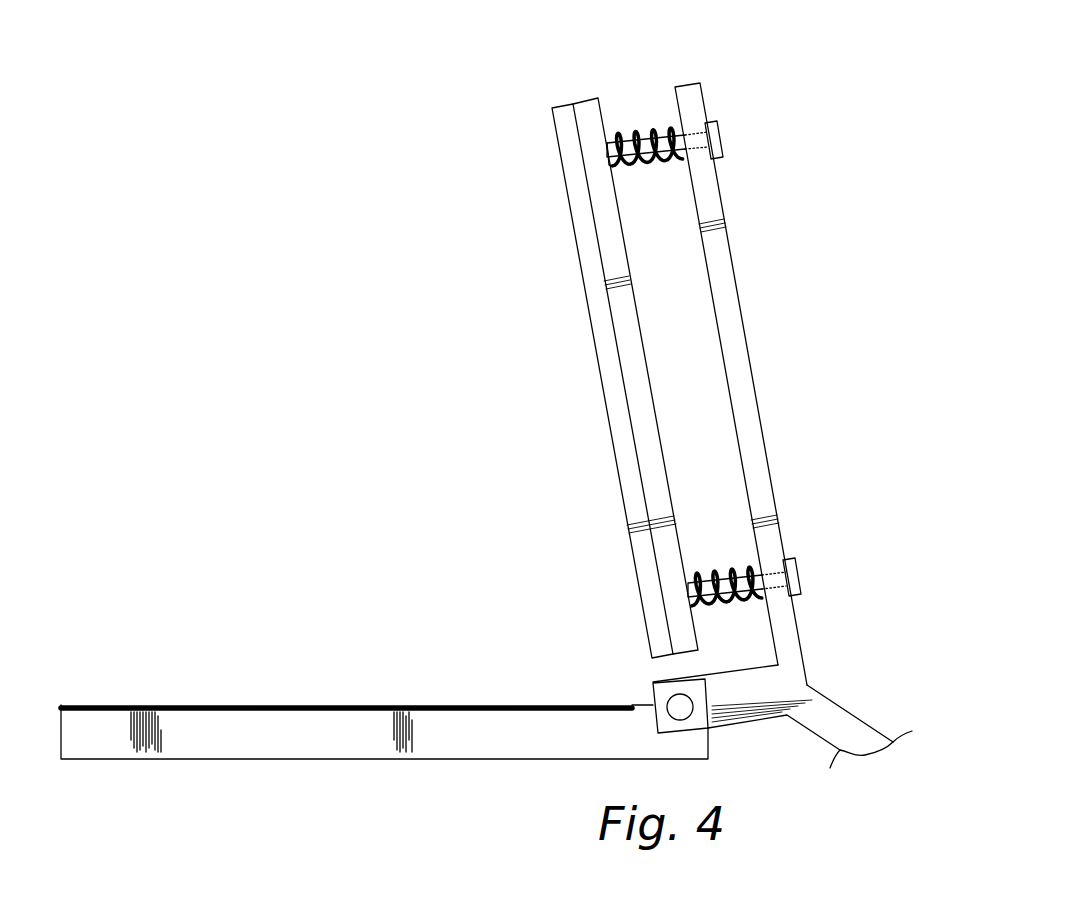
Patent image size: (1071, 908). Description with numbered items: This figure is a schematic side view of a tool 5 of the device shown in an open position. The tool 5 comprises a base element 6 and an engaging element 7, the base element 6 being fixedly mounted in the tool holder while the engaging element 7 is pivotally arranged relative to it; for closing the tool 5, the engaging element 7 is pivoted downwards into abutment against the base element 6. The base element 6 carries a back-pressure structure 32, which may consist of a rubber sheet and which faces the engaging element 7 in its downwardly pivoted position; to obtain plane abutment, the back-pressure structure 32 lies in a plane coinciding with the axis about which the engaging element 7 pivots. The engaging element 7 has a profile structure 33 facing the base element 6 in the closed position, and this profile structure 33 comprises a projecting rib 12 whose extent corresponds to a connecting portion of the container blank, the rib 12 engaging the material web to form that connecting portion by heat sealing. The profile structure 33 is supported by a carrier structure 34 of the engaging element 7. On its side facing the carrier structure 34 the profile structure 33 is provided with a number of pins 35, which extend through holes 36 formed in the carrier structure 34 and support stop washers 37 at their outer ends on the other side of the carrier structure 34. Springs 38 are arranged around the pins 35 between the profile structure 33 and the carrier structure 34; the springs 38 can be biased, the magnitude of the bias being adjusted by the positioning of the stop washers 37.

The tool 5 is at (272, 368).
The base element 6 is at (303, 728).
The engaging element 7 is at (767, 295).
The rib 12 is at (614, 398).
The back-pressure structure 32 is at (252, 705).
The profile structure 33 is at (637, 387).
The carrier structure 34 is at (745, 397).
The pins 35 is at (638, 133).
The holes 36 is at (697, 138).
The stop washers 37 is at (722, 137).
The springs 38 is at (642, 167).